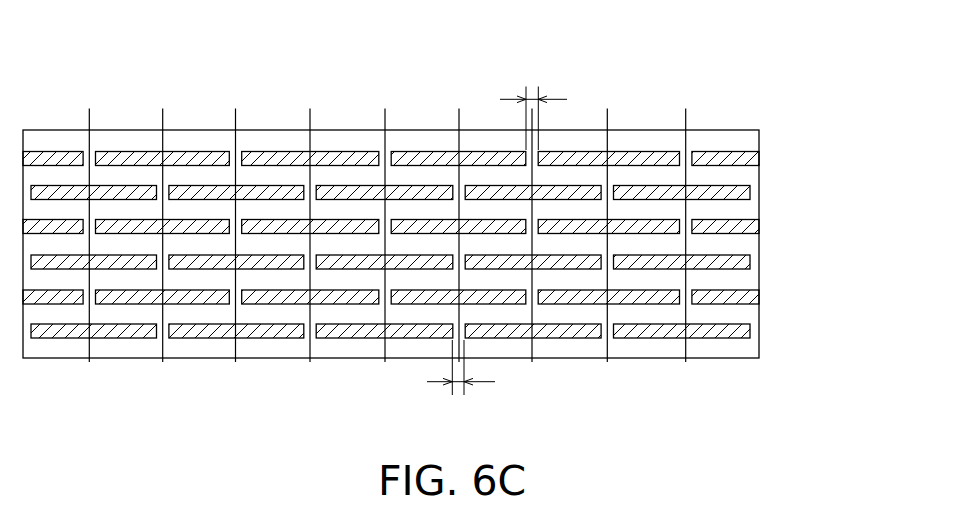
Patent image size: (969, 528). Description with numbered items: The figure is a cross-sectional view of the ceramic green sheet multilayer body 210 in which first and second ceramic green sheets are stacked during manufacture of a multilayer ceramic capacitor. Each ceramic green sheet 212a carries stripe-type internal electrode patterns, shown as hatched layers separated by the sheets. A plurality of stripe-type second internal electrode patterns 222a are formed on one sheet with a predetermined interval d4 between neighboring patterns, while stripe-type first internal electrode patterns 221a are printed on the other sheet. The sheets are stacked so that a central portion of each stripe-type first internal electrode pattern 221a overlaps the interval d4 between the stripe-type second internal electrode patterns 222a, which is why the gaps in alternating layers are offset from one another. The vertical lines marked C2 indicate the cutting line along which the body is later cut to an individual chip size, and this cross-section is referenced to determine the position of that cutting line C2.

The ceramic green sheet multilayer body 210 is at (103, 50).
The stripe-type second internal electrode pattern 222a is at (722, 225).
The stripe-type first internal electrode pattern 221a is at (747, 263).
The ceramic green sheet 212a is at (742, 247).
The cutting line C2 is at (387, 238).
The interval d4 is at (497, 242).